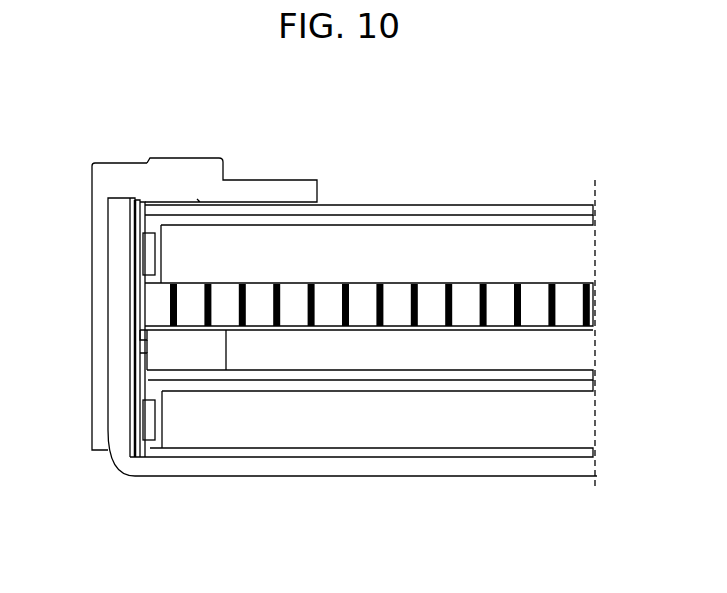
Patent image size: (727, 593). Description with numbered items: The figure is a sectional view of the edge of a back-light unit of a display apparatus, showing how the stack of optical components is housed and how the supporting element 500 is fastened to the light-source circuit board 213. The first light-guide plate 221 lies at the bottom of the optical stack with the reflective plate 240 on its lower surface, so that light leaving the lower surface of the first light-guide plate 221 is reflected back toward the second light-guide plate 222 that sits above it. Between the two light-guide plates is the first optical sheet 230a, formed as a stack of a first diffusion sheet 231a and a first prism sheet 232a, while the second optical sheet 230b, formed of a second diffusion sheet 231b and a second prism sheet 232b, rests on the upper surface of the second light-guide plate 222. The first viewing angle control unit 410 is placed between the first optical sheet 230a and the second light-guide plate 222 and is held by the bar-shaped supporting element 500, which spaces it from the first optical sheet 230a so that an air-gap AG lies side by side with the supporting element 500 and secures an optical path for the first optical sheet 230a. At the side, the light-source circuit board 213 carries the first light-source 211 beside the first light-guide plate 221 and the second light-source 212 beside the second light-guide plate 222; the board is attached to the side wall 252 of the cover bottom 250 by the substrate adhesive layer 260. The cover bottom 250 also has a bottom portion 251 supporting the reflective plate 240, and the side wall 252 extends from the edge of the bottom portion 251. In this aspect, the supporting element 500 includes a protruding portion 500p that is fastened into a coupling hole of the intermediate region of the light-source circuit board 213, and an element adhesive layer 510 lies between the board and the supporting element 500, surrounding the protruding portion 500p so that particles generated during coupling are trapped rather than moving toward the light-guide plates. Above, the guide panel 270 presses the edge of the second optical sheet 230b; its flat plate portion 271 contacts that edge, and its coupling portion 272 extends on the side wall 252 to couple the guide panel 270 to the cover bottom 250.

The guide panel 270 is at (160, 94).
The flat plate portion 271 is at (168, 188).
The coupling portion 272 is at (98, 200).
The substrate adhesive layer 260 is at (137, 221).
The second light-source 212 is at (150, 262).
The light-source circuit board 213 is at (138, 297).
The element adhesive layer 510 is at (140, 335).
The protruding portion 500p is at (140, 365).
The first light-source 211 is at (148, 412).
The side wall 252 is at (120, 428).
The bottom portion 251 is at (157, 468).
The cover bottom 250 is at (153, 538).
The supporting element 500 is at (213, 343).
The reflective plate 240 is at (318, 450).
The first prism sheet 232a is at (388, 375).
The first diffusion sheet 231a is at (456, 385).
The first optical sheet 230a is at (475, 538).
The air-gap AG is at (513, 343).
The first viewing angle control unit 410 is at (370, 283).
The second diffusion sheet 231b is at (468, 212).
The second prism sheet 232b is at (538, 205).
The second optical sheet 230b is at (540, 94).
The second light-guide plate 222 is at (585, 258).
The first light-guide plate 221 is at (585, 428).